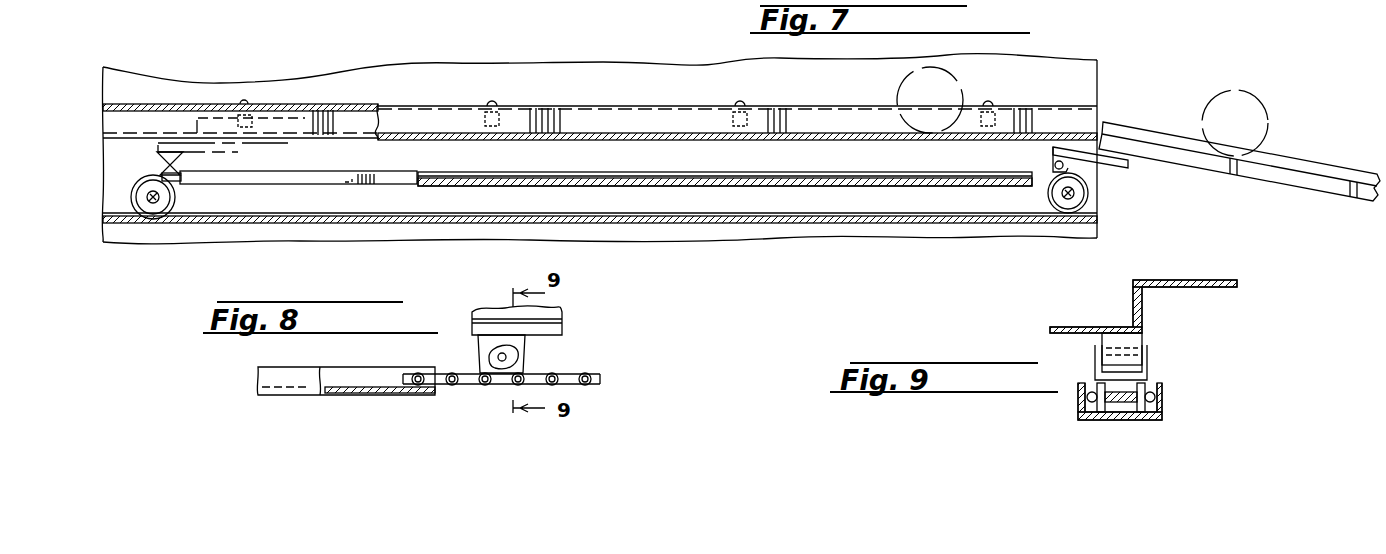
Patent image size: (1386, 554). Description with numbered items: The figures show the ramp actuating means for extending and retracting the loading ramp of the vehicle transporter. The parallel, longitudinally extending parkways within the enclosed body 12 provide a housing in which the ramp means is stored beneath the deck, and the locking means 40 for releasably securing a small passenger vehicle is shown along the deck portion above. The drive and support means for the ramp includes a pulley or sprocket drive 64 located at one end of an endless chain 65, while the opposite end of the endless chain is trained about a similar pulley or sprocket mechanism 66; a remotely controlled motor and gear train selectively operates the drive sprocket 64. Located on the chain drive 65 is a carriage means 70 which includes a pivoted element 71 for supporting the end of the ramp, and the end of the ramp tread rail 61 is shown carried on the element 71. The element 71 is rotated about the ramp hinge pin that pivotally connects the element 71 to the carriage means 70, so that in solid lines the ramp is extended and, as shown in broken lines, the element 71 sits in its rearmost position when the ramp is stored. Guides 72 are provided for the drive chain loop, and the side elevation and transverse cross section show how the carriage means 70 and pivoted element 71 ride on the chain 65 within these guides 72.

In FIG. 7, the enclosed body 12 is at (599, 63).
In FIG. 7, the locking means 40 is at (490, 106).
In FIG. 7, the tread rail 61 is at (1307, 168).
In FIG. 7, the pulley or sprocket drive 64 is at (152, 210).
In FIG. 8, the endless chain 65 is at (600, 375).
In FIG. 7, the pulley or sprocket mechanism 66 is at (1067, 205).
In FIG. 8, the carriage means 70 is at (527, 363).
In FIG. 9, the carriage means 70 is at (1147, 375).
In FIG. 7, the pivoted element 71 is at (158, 153).
In FIG. 8, the pivoted element 71 is at (547, 327).
In FIG. 9, the pivoted element 71 is at (1097, 337).
In FIG. 7, the guides 72 is at (300, 175).
In FIG. 8, the guides 72 is at (257, 383).
In FIG. 9, the guides 72 is at (1162, 397).